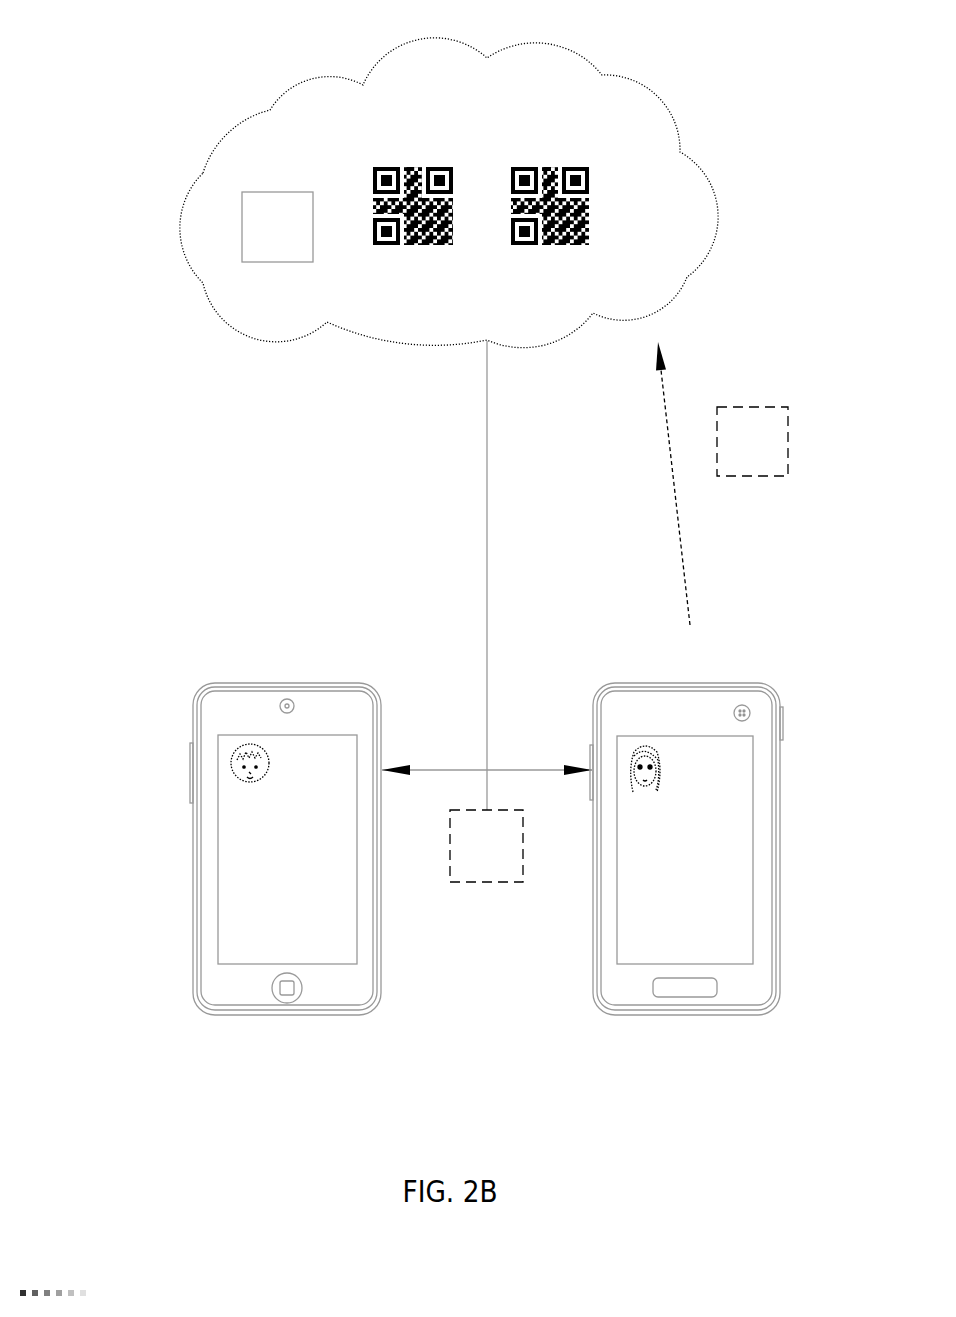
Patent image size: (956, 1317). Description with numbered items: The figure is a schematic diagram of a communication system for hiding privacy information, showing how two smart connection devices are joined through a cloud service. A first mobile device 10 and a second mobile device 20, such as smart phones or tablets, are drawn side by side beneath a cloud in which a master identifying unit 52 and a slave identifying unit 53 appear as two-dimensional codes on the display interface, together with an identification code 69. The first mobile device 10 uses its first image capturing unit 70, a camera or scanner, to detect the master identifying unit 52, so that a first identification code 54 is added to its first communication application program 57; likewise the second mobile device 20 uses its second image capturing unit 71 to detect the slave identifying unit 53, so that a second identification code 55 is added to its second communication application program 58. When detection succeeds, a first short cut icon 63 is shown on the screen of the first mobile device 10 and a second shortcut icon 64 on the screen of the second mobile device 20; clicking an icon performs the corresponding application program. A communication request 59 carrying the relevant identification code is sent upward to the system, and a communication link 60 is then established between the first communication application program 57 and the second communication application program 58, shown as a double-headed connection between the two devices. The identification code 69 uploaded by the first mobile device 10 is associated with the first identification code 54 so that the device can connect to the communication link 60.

The first mobile device 10 is at (248, 880).
The second mobile device 20 is at (708, 877).
The master identifying unit 52 is at (417, 166).
The slave identifying unit 53 is at (553, 166).
The first identification code 54 is at (413, 246).
The second identification code 55 is at (563, 246).
The first communication application program 57 is at (332, 963).
The second communication application program 58 is at (732, 963).
The communication request 59 is at (672, 452).
The communication link 60 is at (487, 611).
The first short cut icon 63 is at (231, 760).
The second shortcut icon 64 is at (645, 745).
The identification code 69 is at (241, 229).
The first image capturing unit 70 is at (292, 698).
The second image capturing unit 71 is at (747, 706).